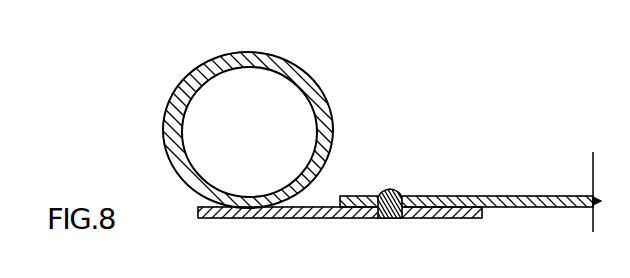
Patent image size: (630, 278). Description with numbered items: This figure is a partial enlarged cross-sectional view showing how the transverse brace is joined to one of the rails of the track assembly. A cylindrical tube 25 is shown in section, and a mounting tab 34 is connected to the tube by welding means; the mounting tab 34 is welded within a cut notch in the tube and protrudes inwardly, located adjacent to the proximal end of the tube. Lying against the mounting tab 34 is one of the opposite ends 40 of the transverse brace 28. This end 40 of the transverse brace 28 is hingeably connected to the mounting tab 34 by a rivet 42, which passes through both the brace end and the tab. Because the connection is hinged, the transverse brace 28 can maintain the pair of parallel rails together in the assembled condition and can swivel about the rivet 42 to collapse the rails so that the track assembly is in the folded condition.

The cylindrical tube 25 is at (321, 86).
The transverse brace 28 is at (529, 196).
The mounting tab 34 is at (335, 219).
The opposite end 40 is at (362, 196).
The rivet 42 is at (396, 191).